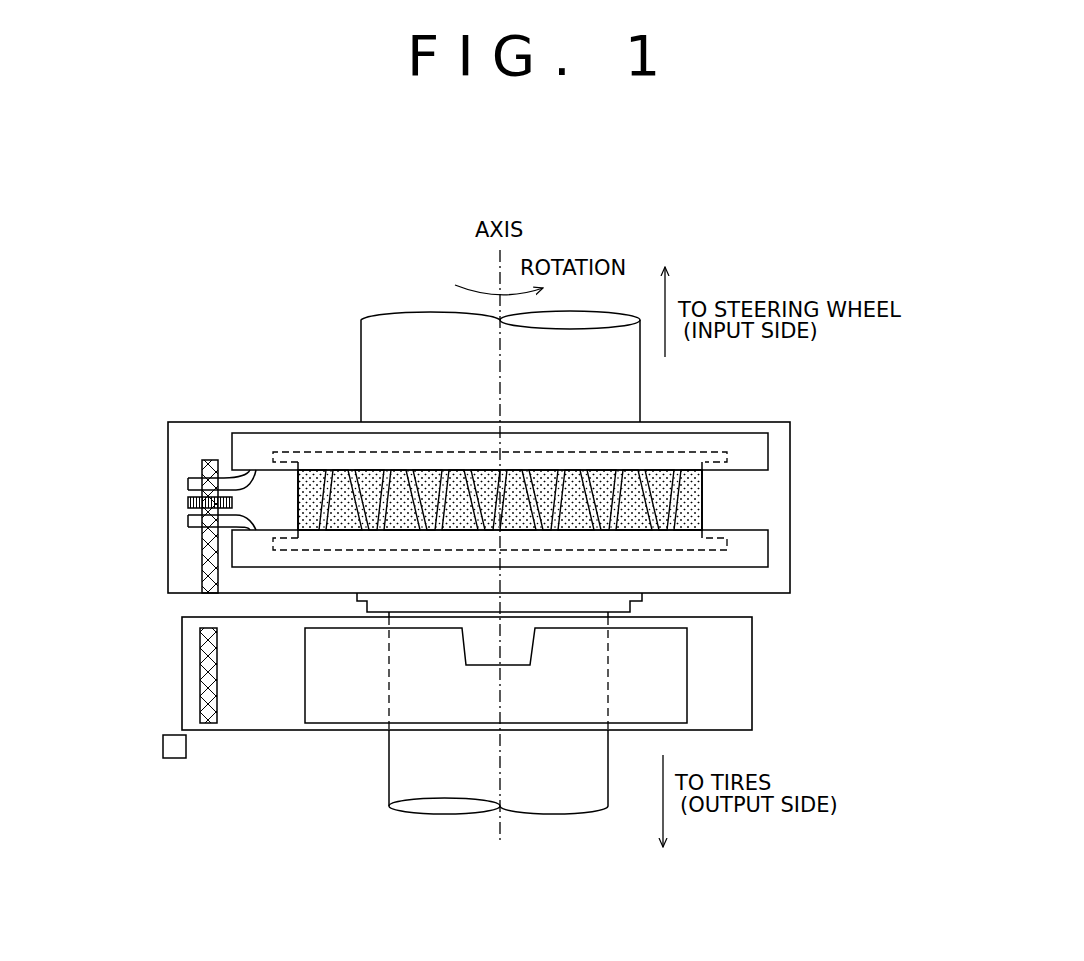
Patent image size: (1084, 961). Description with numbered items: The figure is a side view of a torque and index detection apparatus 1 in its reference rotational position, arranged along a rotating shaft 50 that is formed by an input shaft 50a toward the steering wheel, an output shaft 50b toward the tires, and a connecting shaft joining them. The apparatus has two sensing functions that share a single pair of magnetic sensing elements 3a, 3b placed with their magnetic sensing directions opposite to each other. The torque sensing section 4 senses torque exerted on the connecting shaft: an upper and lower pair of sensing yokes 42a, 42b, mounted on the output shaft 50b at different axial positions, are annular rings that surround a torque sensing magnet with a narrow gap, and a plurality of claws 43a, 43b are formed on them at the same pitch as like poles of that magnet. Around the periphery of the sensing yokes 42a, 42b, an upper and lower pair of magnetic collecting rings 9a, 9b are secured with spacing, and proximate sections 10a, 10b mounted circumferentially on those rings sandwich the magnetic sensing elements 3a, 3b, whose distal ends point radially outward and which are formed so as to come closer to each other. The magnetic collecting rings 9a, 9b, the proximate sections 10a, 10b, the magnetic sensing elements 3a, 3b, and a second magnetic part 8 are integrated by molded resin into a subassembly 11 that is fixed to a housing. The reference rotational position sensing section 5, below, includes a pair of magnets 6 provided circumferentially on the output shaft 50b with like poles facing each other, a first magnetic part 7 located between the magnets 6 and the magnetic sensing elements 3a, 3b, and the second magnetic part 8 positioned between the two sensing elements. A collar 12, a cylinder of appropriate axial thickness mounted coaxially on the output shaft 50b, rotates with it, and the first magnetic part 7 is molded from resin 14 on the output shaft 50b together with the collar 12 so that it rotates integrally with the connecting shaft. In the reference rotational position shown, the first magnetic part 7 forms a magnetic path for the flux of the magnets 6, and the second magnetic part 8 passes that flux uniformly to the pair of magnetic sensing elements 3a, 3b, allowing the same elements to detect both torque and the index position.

The torque and index detection apparatus 1 is at (241, 323).
The magnetic sensing element 3a is at (190, 500).
The magnetic sensing element 3b is at (210, 502).
The torque sensing section 4 is at (802, 437).
The reference rotational position sensing section 5 is at (133, 680).
The magnet 6 is at (172, 760).
The first magnetic part 7 is at (200, 690).
The second magnetic part 8 is at (205, 592).
The magnetic collecting ring 9a is at (320, 432).
The magnetic collecting ring 9b is at (260, 547).
The proximate section 10a is at (188, 484).
The proximate section 10b is at (188, 520).
The subassembly 11 is at (188, 428).
The collar 12 is at (336, 716).
The resin 14 is at (752, 710).
The sensing yoke 42a is at (727, 456).
The sensing yoke 42b is at (727, 545).
The claw 43a is at (700, 498).
The claw 43b is at (500, 500).
The rotating shaft 50 is at (377, 300).
The input shaft 50a is at (368, 336).
The output shaft 50b is at (390, 790).